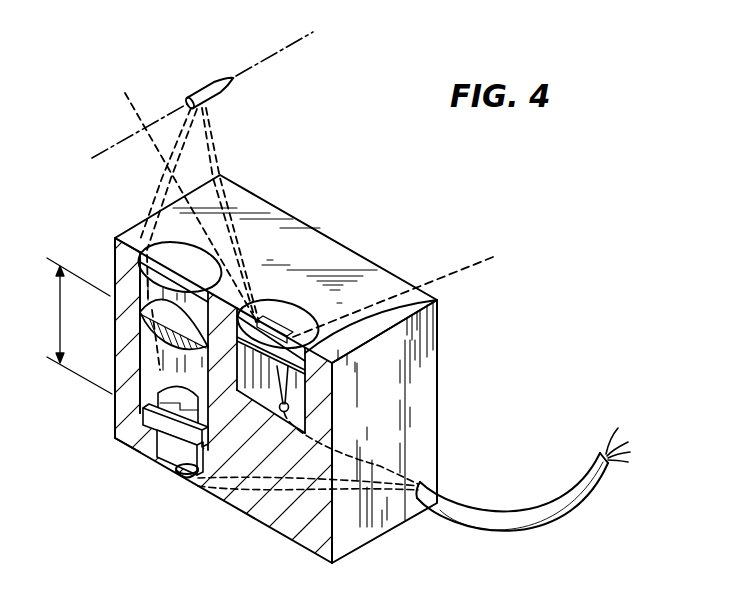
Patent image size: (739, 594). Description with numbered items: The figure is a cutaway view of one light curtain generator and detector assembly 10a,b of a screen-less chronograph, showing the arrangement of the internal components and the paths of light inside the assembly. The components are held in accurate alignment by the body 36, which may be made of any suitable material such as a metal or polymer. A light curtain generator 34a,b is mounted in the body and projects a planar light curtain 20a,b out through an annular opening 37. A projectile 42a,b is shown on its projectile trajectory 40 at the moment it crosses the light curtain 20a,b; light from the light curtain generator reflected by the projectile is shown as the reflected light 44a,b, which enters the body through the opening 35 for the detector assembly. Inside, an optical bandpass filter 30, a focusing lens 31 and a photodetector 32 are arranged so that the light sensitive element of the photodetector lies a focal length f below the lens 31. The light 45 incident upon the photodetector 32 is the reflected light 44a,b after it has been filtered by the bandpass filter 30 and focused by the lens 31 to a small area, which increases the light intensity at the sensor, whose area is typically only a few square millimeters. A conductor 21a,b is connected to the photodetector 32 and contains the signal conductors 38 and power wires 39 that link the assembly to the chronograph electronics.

The light curtain generator and detector assembly 10a,b is at (383, 540).
The light curtain 20a,b is at (463, 268).
The conductor 21a,b is at (537, 510).
The optical bandpass filter 30 is at (143, 256).
The focusing lens 31 is at (143, 318).
The photodetector 32 is at (205, 452).
The light curtain generator 34a,b is at (437, 300).
The opening for detector assembly 35 is at (140, 382).
The body 36 is at (438, 457).
The annular opening for light curtain generator 37 is at (308, 418).
The signal conductors 38 is at (176, 470).
The power wires 39 is at (308, 402).
The projectile trajectory 40 is at (293, 43).
The projectile 42a,b is at (208, 88).
The reflected light 44a,b is at (217, 147).
The light incident upon the photodetector 45 is at (160, 363).
The focal length f is at (79, 326).